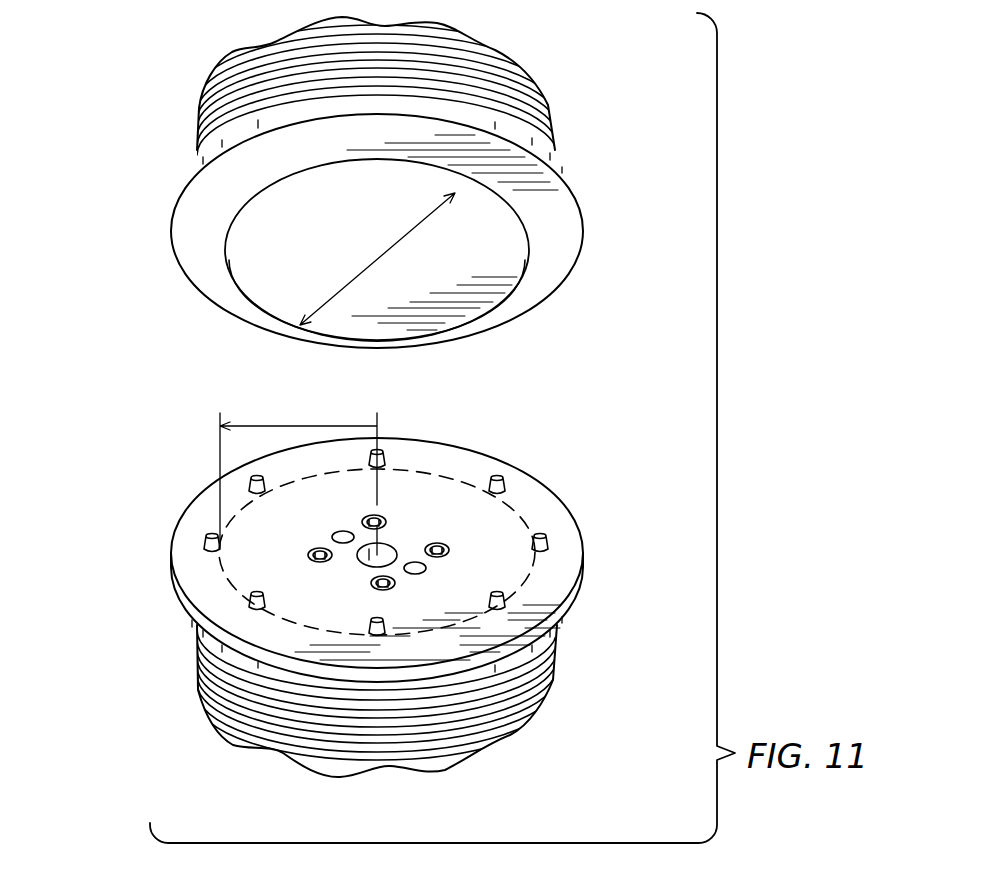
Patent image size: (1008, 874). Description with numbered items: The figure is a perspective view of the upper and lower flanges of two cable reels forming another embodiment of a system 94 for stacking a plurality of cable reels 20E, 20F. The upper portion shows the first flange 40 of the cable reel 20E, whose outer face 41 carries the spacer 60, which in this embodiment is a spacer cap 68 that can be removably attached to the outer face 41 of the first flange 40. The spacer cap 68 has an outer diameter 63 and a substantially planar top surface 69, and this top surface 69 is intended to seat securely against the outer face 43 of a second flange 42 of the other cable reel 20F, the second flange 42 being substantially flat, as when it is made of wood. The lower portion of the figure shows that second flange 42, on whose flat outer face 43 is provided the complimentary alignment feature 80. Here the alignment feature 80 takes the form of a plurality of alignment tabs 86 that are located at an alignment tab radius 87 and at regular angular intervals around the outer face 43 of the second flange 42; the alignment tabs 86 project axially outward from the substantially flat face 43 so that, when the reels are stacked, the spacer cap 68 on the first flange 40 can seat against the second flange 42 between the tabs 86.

The system 94 is at (595, 50).
The cable reel 20E is at (593, 98).
The first flange 40 is at (583, 213).
The outer face 41 is at (191, 307).
The spacer 60 is at (218, 205).
The outer diameter 63 is at (378, 258).
The top surface 69 is at (474, 253).
The spacer cap 68 is at (528, 257).
The cable reel 20F is at (119, 528).
The second flange 42 is at (172, 590).
The outer face 43 is at (176, 498).
The complimentary alignment feature 80 is at (498, 468).
The alignment tabs 86 is at (541, 540).
The alignment tab radius 87 is at (298, 425).